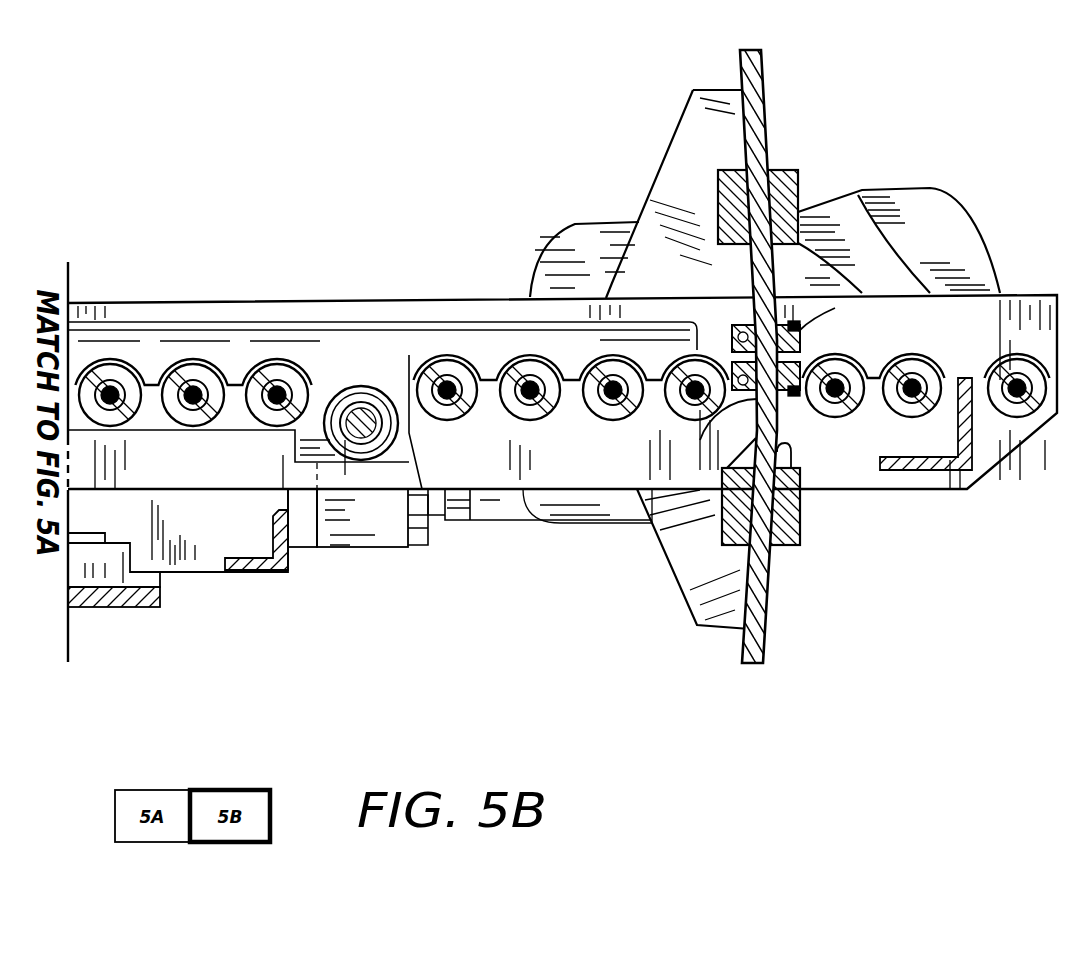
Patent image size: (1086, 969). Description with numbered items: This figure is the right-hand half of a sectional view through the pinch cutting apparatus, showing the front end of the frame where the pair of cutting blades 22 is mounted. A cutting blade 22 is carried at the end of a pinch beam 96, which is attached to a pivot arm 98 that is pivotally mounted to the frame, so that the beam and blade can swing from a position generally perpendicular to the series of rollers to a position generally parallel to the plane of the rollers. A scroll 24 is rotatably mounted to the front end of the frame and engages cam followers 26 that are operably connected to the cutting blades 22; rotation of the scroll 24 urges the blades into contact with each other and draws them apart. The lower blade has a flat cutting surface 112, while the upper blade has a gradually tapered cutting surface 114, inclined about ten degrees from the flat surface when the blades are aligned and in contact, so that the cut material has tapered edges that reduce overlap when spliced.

The cutting blades 22 is at (800, 348).
The scrolls 24 is at (957, 237).
The cam followers 26 is at (787, 167).
The pinch beam 96 is at (758, 118).
The pivot arms 98 is at (690, 137).
The flat cutting surface 112 is at (800, 362).
The tapered cutting surface 114 is at (803, 352).